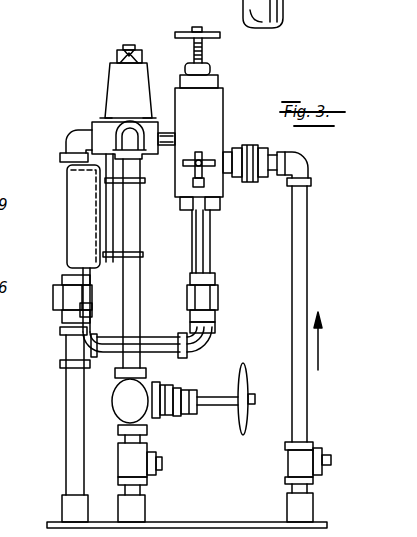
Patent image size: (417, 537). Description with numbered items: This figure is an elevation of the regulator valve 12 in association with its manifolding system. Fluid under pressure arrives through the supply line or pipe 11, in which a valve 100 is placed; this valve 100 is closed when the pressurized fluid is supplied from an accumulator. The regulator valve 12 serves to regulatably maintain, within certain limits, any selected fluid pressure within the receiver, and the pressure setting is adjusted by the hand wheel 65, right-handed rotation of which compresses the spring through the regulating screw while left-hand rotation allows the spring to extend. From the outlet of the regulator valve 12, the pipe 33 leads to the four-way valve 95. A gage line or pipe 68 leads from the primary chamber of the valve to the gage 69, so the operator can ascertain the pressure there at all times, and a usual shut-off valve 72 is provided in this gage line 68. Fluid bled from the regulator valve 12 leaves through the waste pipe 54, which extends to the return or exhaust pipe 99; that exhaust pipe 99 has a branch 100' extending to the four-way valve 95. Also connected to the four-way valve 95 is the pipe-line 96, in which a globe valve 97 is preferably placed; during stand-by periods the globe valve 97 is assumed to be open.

The pipe 11 is at (298, 245).
The regulator valve 12 is at (213, 107).
The pipe 33 is at (172, 133).
The waste pipe 54 is at (148, 340).
The hand wheel 65 is at (213, 32).
The pipe 68 is at (200, 230).
The gage 69 is at (75, 205).
The shut-off valve 72 is at (207, 153).
The four-way valve 95 is at (118, 93).
The pipe-line 96 is at (133, 298).
The globe valve 97 is at (133, 412).
The return or exhaust pipe 99 is at (75, 447).
The valve 100 is at (285, 482).
The branch 100' is at (53, 147).